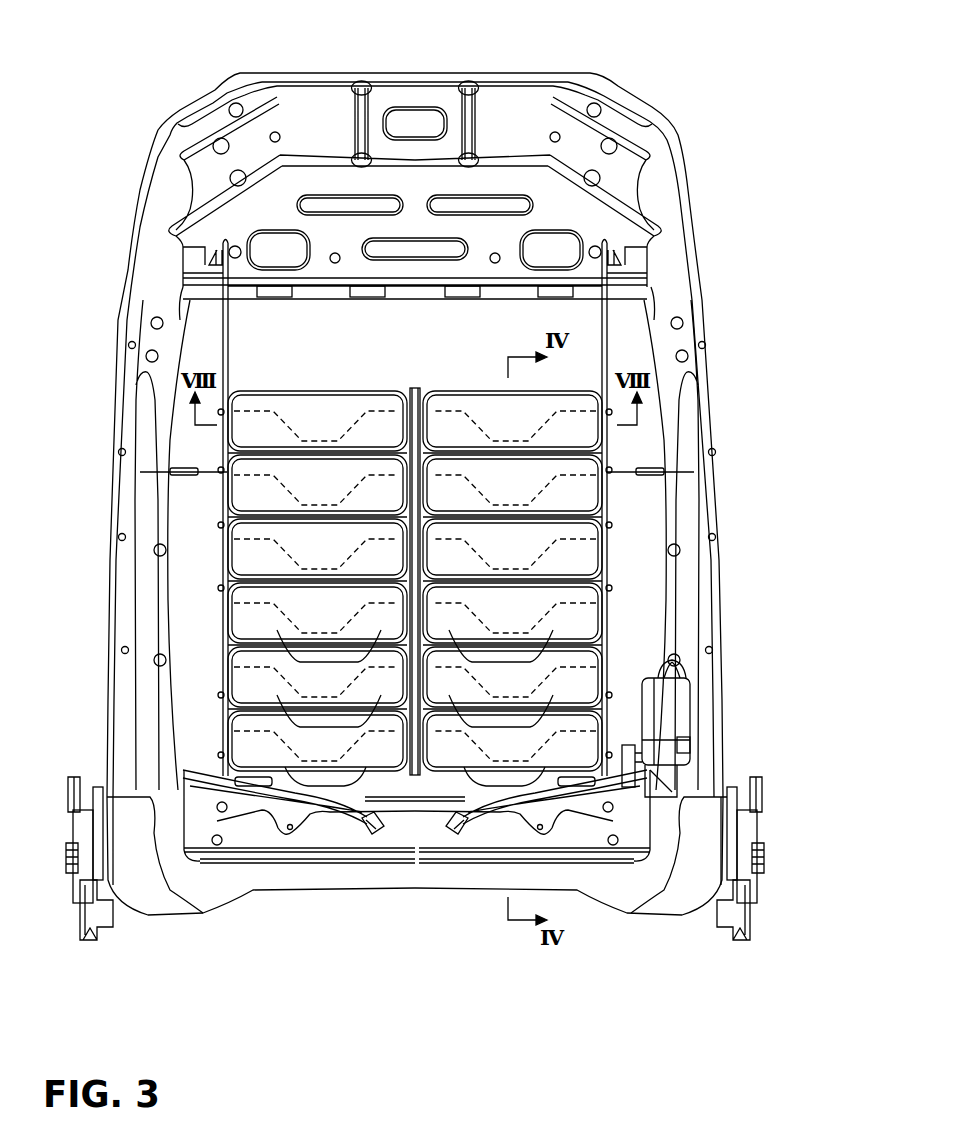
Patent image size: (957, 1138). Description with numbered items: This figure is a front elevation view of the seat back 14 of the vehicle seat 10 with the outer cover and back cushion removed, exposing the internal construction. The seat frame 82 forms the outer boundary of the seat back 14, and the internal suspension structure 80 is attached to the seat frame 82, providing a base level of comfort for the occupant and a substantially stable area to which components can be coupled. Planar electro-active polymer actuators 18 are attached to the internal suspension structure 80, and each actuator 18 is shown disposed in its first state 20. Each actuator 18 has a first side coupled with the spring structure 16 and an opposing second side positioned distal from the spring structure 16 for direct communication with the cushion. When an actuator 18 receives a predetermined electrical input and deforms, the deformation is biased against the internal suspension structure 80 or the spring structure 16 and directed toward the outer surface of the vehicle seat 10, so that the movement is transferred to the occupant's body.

The vehicle seat 10 is at (693, 100).
The seat back 14 is at (686, 170).
The seat frame 82 is at (148, 290).
The internal suspension structure 80 is at (608, 312).
The electro-active polymer actuator 18 is at (250, 555).
The first state 20 is at (607, 477).
The spring structure 16 is at (473, 777).